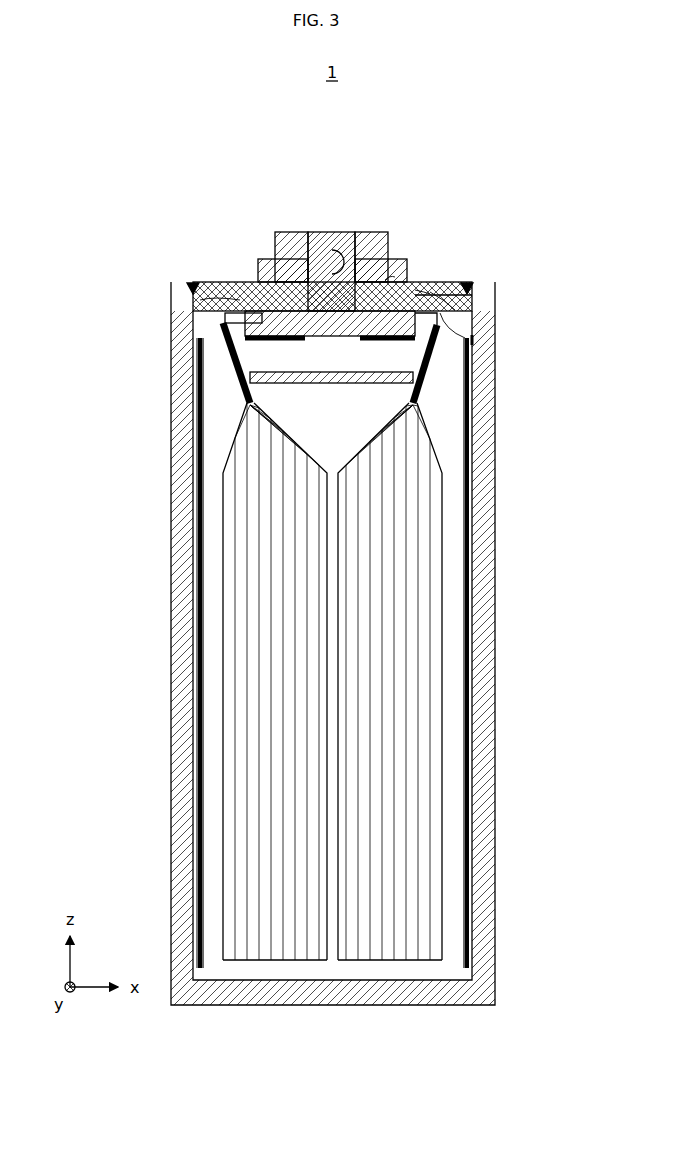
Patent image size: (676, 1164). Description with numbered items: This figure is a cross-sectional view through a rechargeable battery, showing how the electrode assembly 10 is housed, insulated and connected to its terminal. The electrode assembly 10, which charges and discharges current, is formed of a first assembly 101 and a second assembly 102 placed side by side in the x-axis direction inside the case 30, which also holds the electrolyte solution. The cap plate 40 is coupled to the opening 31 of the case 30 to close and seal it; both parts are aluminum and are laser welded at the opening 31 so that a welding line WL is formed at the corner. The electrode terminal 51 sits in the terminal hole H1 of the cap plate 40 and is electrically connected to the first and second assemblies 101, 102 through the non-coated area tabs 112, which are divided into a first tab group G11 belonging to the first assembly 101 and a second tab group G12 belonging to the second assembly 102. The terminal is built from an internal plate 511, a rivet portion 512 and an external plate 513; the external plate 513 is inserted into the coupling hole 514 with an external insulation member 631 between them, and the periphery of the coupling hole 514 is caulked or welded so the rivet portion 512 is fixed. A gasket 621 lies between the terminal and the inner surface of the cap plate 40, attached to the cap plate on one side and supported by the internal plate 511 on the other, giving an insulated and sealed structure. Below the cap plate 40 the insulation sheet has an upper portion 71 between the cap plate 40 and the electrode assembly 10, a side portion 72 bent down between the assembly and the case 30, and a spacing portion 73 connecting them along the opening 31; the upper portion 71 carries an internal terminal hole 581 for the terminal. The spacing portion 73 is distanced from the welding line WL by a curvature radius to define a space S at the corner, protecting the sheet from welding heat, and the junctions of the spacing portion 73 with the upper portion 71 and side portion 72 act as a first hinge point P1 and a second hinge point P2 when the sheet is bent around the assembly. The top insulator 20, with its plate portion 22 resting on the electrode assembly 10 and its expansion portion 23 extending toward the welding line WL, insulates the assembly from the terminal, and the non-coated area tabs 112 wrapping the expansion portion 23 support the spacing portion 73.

The electrode assembly 10 is at (329, 645).
The first assembly 101 is at (255, 766).
The second assembly 102 is at (410, 766).
The non-coated area tab 112 is at (100, 276).
The top insulator 20 is at (276, 394).
The plate portion 22 is at (333, 384).
The expansion portion 23 is at (470, 378).
The case 30 is at (495, 562).
The opening 31 is at (480, 300).
The cap plate 40 is at (226, 298).
The electrode terminal 51 is at (342, 221).
The internal plate 511 is at (306, 262).
The rivet portion 512 is at (338, 265).
The external plate 513 is at (372, 248).
The coupling hole 514 is at (392, 262).
The internal terminal hole 581 is at (455, 293).
The gasket 621 is at (410, 291).
The external insulation member 631 is at (395, 276).
The upper portion 71 is at (236, 318).
The side portion 72 is at (200, 370).
The spacing portion 73 is at (236, 345).
The terminal hole H1 is at (294, 223).
The welding line WL is at (193, 282).
The first hinge point P1 is at (476, 285).
The second hinge point P2 is at (474, 336).
The space S is at (458, 318).
The first tab group G11 is at (226, 387).
The second tab group G12 is at (446, 390).